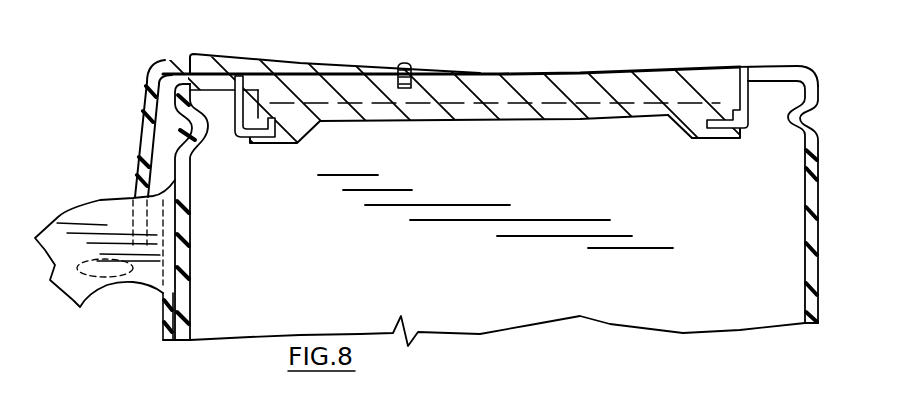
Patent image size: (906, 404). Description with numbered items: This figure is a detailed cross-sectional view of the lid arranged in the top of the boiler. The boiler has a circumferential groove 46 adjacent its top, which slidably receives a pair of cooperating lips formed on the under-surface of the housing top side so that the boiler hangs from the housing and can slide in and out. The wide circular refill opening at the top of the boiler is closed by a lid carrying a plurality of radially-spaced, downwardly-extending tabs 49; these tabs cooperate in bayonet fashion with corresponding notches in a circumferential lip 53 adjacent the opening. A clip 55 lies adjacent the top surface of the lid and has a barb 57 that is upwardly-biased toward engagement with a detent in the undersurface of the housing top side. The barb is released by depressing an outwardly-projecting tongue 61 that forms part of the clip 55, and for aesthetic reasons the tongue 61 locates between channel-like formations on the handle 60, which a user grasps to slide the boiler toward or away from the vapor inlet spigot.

The circumferential groove 46 is at (787, 140).
The downwardly-extending tabs 49 is at (295, 147).
The circumferential lip 53 is at (240, 135).
The clip 55 is at (150, 66).
The barb 57 is at (233, 58).
The handle 60 is at (72, 207).
The tongue 61 is at (140, 153).